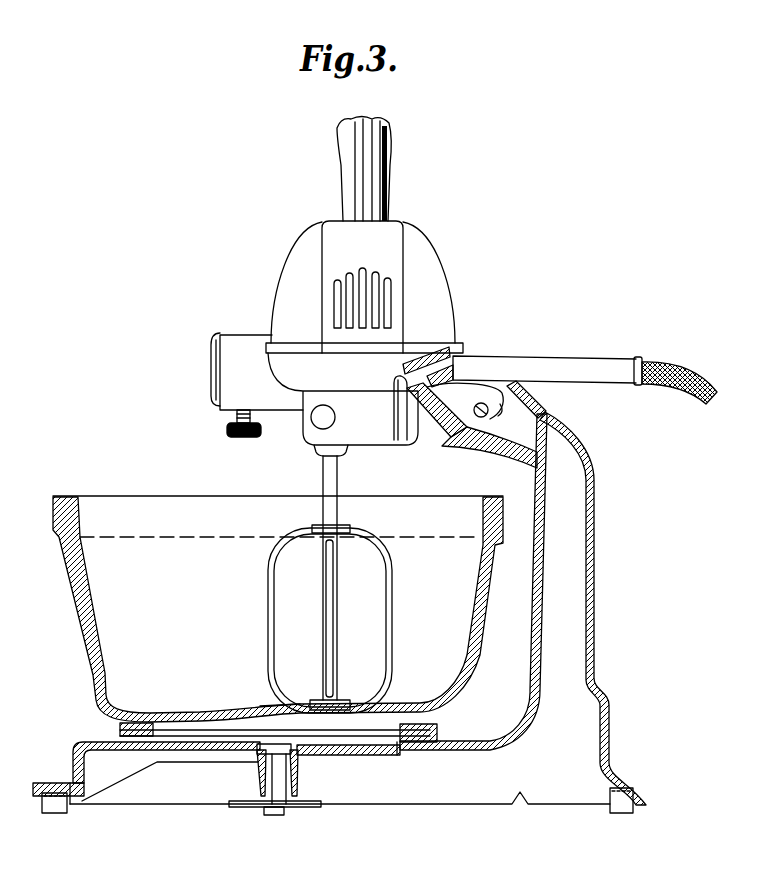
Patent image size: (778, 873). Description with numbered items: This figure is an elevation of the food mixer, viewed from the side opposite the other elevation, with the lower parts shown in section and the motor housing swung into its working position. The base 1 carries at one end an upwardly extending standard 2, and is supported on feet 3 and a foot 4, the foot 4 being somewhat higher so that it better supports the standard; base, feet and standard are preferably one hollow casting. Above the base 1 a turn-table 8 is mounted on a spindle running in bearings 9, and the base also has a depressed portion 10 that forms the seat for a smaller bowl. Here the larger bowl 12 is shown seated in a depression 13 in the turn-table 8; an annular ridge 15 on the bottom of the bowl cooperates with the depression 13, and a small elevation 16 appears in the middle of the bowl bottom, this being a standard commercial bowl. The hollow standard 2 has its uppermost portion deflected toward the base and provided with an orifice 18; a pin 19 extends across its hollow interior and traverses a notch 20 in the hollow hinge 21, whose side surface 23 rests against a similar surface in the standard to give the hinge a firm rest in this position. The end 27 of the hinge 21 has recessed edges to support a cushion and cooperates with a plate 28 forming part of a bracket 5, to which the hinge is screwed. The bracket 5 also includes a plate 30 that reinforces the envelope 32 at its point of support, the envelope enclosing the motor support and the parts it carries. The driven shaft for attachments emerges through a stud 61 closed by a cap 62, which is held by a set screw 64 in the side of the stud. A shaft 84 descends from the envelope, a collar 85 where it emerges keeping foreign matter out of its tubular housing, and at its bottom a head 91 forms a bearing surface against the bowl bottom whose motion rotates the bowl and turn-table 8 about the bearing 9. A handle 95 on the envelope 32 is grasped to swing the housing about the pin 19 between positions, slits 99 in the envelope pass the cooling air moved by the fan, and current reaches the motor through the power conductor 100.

The base 1 is at (86, 742).
The standard 2 is at (596, 641).
The feet 3 is at (55, 783).
The foot 4 is at (312, 808).
The bracket 5 is at (414, 367).
The turn-table 8 is at (439, 733).
The bearings 9 is at (258, 779).
The depressed portion 10 is at (388, 757).
The bowl 12 is at (72, 585).
The depression 13 is at (412, 742).
The annular ridge 15 is at (270, 733).
The elevation 16 is at (266, 708).
The orifice 18 is at (521, 389).
The pin 19 is at (486, 415).
The notch 20 is at (502, 414).
The hinge 21 is at (480, 440).
The side surface 23 is at (460, 434).
The end 27 is at (452, 372).
The plate 28 is at (406, 377).
The plate 30 is at (392, 616).
The envelope 32 is at (441, 266).
The stud 61 is at (238, 335).
The cap 62 is at (213, 353).
The set screw 64 is at (259, 433).
The shaft 84 is at (338, 477).
The collar 85 is at (318, 456).
The head 91 is at (371, 704).
The handle 95 is at (390, 140).
The slits 99 is at (375, 272).
The power conductor 100 is at (596, 357).